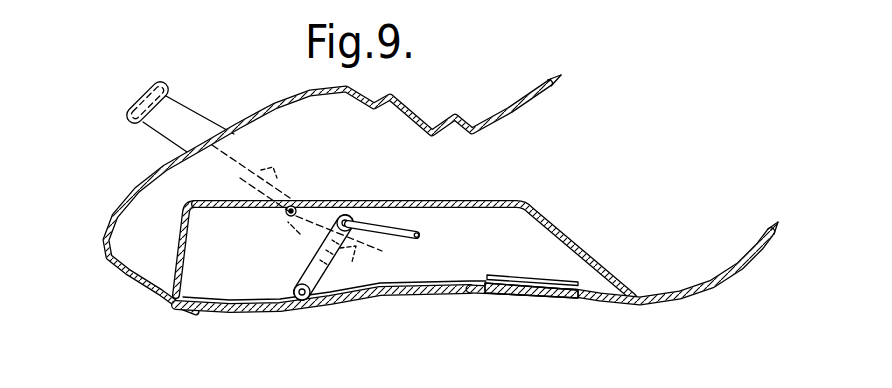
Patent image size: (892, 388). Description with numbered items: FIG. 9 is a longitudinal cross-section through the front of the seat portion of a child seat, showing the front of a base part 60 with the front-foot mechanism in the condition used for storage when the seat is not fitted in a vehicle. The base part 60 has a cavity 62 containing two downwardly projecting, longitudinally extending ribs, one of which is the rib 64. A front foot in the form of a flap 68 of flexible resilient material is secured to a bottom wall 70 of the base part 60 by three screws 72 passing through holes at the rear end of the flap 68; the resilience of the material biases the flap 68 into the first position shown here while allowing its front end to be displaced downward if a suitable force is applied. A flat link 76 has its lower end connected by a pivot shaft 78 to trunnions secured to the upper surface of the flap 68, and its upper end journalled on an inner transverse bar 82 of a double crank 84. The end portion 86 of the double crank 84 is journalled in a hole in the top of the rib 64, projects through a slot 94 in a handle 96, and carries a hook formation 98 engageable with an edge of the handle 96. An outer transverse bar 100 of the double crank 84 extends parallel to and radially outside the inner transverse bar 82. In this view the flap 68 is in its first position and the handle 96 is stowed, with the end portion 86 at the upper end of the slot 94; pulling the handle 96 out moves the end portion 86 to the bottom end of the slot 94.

The base part 60 is at (118, 206).
The cavity 62 is at (460, 220).
The rib 64 is at (192, 266).
The flap 68 is at (203, 316).
The bottom wall 70 is at (599, 301).
The screws 72 is at (562, 298).
The flat link 76 is at (331, 271).
The pivot shaft 78 is at (296, 275).
The inner transverse bar 82 is at (361, 248).
The double crank 84 is at (416, 217).
The end portion 86 is at (304, 203).
The slot 94 is at (312, 232).
The handle 96 is at (190, 118).
The hook formation 98 is at (272, 168).
The outer transverse bar 100 is at (421, 237).